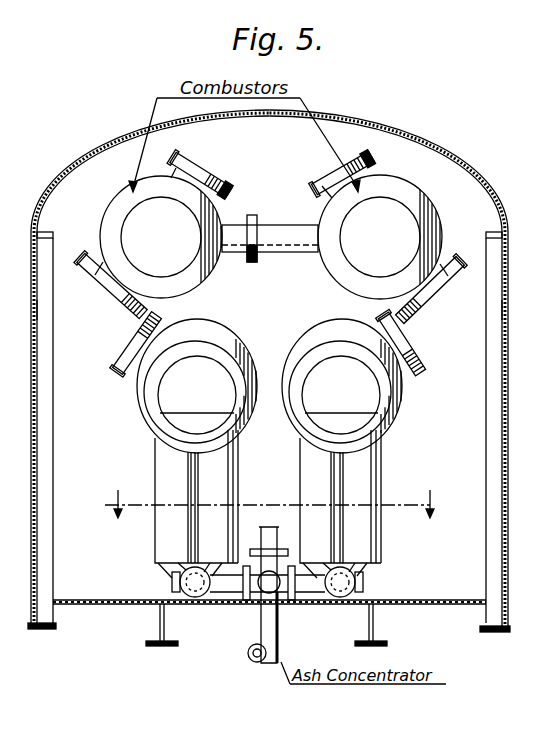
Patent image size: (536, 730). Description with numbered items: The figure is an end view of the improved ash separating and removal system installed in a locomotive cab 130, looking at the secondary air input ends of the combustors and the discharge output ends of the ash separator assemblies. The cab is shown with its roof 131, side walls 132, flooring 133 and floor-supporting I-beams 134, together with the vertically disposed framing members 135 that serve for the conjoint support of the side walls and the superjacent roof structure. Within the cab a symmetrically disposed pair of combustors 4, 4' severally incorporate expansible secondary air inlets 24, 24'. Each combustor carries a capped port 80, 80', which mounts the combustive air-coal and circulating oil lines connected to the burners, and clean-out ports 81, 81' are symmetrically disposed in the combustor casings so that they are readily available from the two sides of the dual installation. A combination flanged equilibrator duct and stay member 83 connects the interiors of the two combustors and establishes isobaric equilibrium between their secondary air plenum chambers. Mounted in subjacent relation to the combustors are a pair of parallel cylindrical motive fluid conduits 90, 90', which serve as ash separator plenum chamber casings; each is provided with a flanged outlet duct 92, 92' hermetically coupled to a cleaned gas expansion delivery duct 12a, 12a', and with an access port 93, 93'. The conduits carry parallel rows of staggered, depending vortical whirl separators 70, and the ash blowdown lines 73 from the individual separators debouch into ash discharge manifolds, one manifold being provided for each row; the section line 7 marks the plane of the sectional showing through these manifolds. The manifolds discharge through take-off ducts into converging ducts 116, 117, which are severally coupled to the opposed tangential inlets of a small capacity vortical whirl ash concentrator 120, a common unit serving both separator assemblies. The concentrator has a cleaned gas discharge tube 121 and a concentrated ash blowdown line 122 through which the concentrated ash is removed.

The locomotive cab 130 is at (83, 162).
The roof 131 is at (417, 146).
The side wall 132 is at (506, 373).
The flooring 133 is at (101, 605).
The floor-supporting I-beam 134 is at (158, 632).
The vertically disposed framing member 135 is at (50, 462).
The combustor 4 is at (148, 237).
The combustor 4' is at (388, 237).
The expansible secondary air inlet 24 is at (161, 237).
The expansible secondary air inlet 24' is at (380, 237).
The capped port 80 is at (211, 175).
The capped port 80' is at (337, 171).
The clean-out port 81 is at (110, 285).
The clean-out port 81' is at (430, 289).
The combination flanged equilibrator duct and stay member 83 is at (296, 254).
The motive fluid conduit 90 is at (197, 373).
The motive fluid conduit 90' is at (342, 373).
The flanged outlet duct 92 is at (200, 383).
The flanged outlet duct 92' is at (324, 391).
The access port 93 is at (119, 344).
The access port 93' is at (412, 342).
The cleaned gas expansion delivery duct 12a is at (175, 490).
The cleaned gas expansion delivery duct 12a' is at (368, 488).
The section line 7 is at (269, 494).
The vortical whirl separator 70 is at (178, 486).
The ash blowdown line 73 is at (170, 569).
The converging duct 116 is at (226, 594).
The converging duct 117 is at (318, 598).
The vortical whirl ash concentrator 120 is at (258, 624).
The cleaned gas discharge tube 121 is at (272, 526).
The concentrated ash blowdown line 122 is at (250, 661).